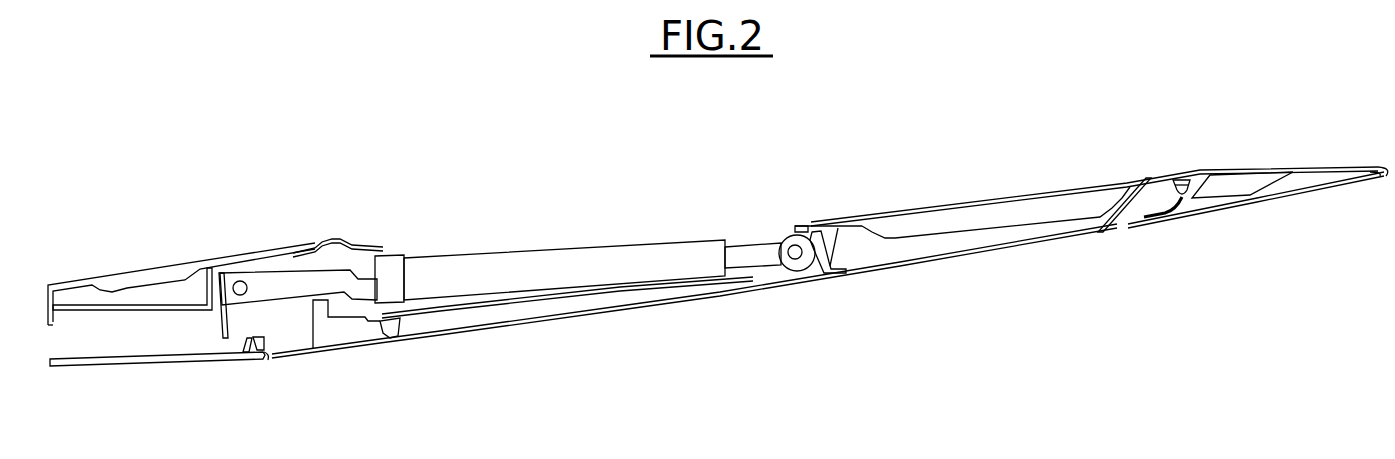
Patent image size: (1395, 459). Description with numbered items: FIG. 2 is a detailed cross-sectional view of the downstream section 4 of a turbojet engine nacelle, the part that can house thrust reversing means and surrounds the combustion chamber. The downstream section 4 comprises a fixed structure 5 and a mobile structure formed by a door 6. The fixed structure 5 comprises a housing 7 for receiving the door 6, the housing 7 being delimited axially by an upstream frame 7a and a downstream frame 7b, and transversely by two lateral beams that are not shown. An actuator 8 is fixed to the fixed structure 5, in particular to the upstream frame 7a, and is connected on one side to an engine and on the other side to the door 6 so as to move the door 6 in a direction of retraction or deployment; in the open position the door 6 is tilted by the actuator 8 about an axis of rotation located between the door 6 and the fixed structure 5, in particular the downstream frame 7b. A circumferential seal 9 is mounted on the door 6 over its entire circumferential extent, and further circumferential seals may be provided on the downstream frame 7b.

The downstream section 4 is at (1082, 256).
The fixed structure 5 is at (80, 375).
The door 6 is at (500, 336).
The housing 7 is at (266, 358).
The upstream frame 7a is at (143, 375).
The downstream frame 7b is at (1257, 212).
The actuator 8 is at (552, 242).
The circumferential seal 9 is at (1181, 178).